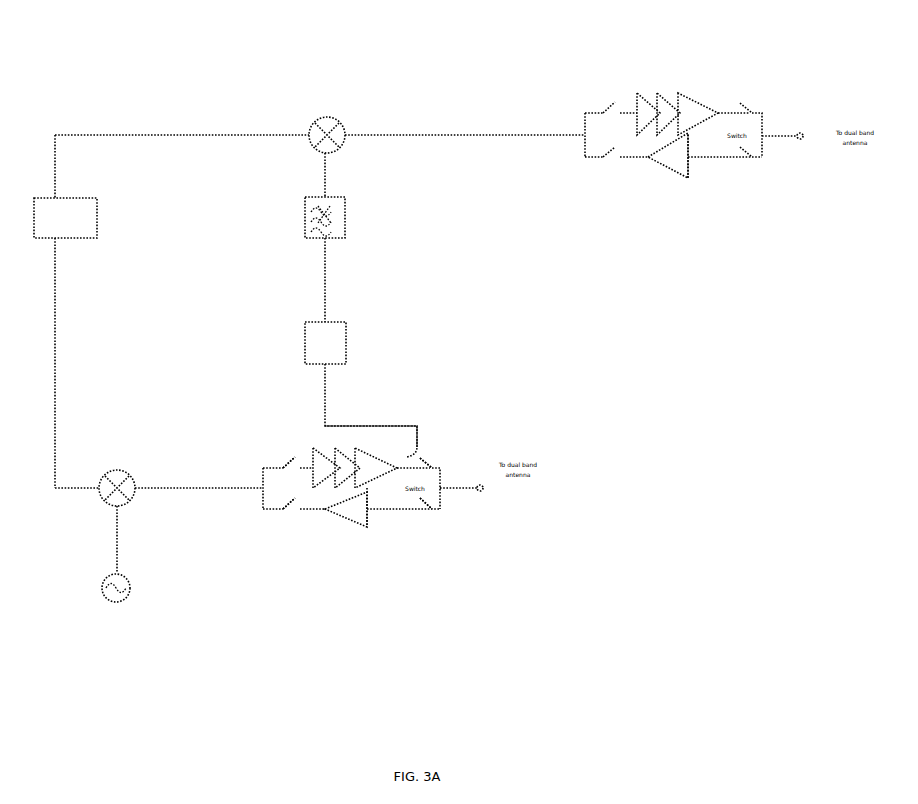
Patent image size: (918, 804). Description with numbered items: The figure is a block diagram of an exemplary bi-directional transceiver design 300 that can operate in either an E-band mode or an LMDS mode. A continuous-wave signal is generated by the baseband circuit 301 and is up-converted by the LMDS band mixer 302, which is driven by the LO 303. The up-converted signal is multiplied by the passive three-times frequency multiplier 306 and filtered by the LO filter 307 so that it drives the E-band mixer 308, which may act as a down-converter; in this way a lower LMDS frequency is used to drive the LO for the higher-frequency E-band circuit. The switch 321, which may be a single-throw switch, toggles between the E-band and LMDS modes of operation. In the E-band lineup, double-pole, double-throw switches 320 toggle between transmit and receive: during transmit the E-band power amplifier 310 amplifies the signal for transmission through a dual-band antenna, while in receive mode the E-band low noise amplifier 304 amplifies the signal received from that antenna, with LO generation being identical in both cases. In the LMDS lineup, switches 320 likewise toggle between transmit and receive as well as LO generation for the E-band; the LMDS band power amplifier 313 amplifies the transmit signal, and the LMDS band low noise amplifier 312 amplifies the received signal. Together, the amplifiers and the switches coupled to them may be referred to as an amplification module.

The bi-directional transceiver design 300 is at (210, 68).
The baseband circuit 301 is at (97, 218).
The LMDS band mixer 302 is at (92, 489).
The LO 303 is at (130, 597).
The E-band low noise amplifier 304 is at (650, 173).
The passive 3× frequency multiplier 306 is at (348, 345).
The LO filter 307 is at (345, 243).
The E-band mixer 308 is at (343, 146).
The E-band power amplifier 310 is at (668, 92).
The LMDS band low noise amplifier 312 is at (367, 527).
The LMDS band power amplifier 313 is at (313, 470).
The double-pole, double-throw switches 320 is at (438, 466).
The switch 321 is at (417, 422).